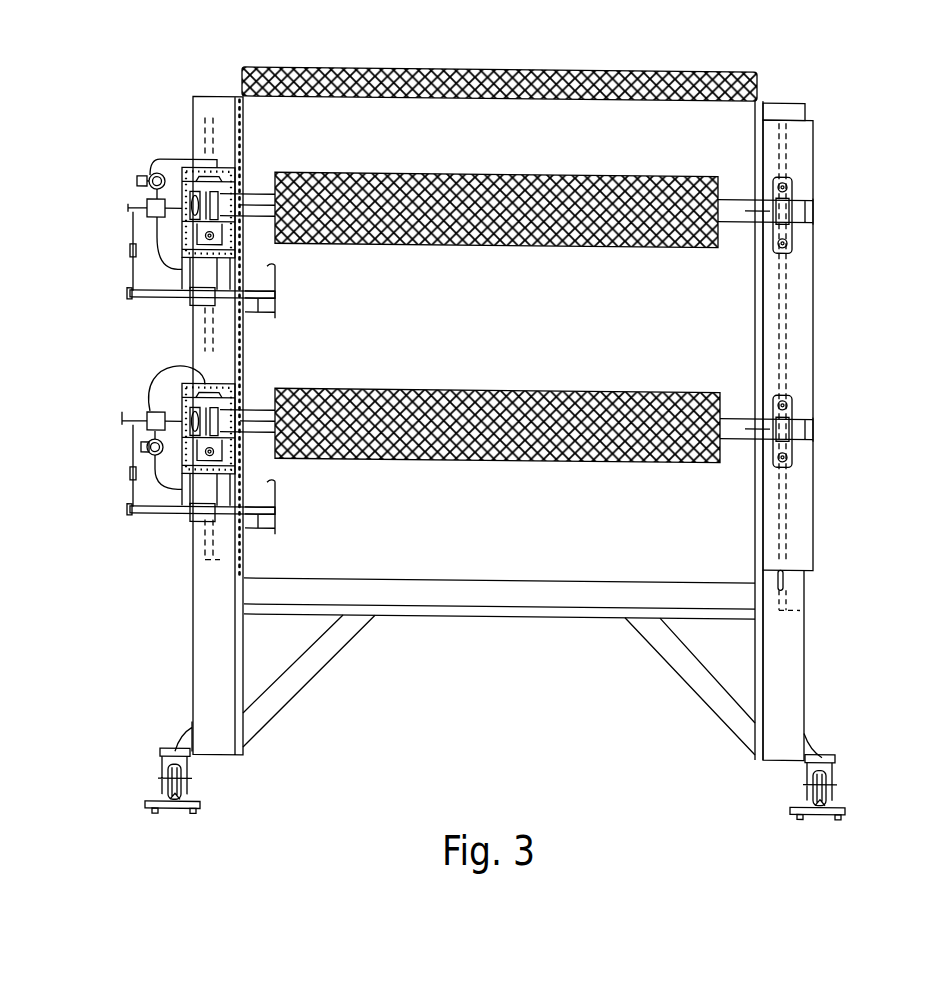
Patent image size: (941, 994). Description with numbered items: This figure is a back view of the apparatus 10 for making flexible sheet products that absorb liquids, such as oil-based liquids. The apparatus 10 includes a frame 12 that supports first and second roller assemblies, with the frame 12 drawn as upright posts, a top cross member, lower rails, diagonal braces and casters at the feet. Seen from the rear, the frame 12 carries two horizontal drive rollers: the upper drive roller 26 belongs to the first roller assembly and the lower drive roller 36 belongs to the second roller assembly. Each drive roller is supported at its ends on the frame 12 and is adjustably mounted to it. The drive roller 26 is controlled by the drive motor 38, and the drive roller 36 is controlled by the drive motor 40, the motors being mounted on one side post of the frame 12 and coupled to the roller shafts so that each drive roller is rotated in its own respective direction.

The apparatus 10 is at (843, 102).
The frame 12 is at (797, 467).
The drive roller 26 is at (553, 243).
The drive roller 36 is at (553, 458).
The drive motor 38 is at (106, 278).
The drive motor 40 is at (106, 501).